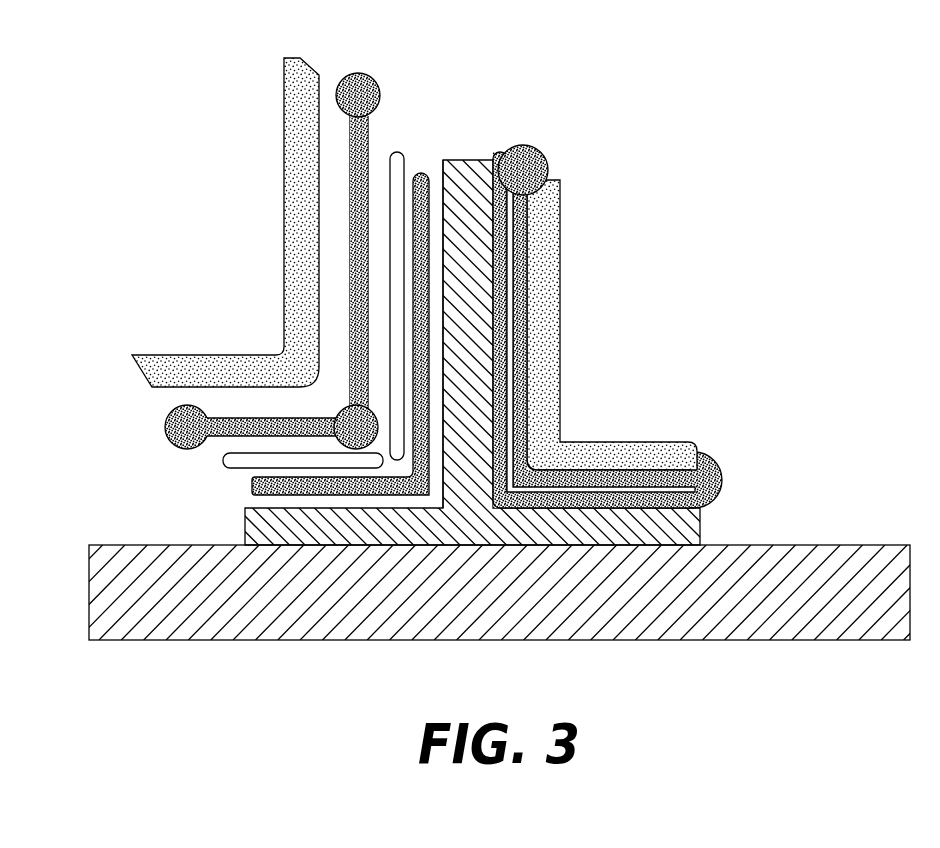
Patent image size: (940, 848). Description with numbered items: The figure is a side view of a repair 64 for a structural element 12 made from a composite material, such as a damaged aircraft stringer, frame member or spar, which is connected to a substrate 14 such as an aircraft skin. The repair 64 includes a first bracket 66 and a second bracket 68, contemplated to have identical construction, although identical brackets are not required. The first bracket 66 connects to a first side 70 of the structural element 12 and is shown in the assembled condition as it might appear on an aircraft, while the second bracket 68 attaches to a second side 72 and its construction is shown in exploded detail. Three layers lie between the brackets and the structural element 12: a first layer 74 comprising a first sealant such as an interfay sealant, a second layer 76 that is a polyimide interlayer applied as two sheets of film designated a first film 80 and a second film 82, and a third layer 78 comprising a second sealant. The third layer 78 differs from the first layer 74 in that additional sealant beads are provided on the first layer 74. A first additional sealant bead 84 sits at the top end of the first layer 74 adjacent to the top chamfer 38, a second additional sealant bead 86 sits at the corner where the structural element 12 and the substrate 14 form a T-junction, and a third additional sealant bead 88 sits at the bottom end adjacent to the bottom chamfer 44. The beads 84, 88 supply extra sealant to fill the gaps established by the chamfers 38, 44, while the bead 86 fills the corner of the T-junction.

The structural element 12 is at (466, 172).
The substrate 14 is at (820, 548).
The top chamfer 38 is at (310, 63).
The bottom chamfer 44 is at (132, 362).
The repair 64 is at (797, 175).
The first bracket 66 is at (663, 335).
The second bracket 68 is at (176, 268).
The first side 70 is at (547, 220).
The second side 72 is at (441, 202).
The first layer 74 is at (350, 118).
The second layer 76 is at (423, 322).
The third layer 78 is at (252, 487).
The first film 80 is at (390, 283).
The second film 82 is at (223, 460).
The first additional sealant bead 84 is at (365, 76).
The second additional sealant bead 86 is at (350, 412).
The third additional sealant bead 88 is at (167, 427).